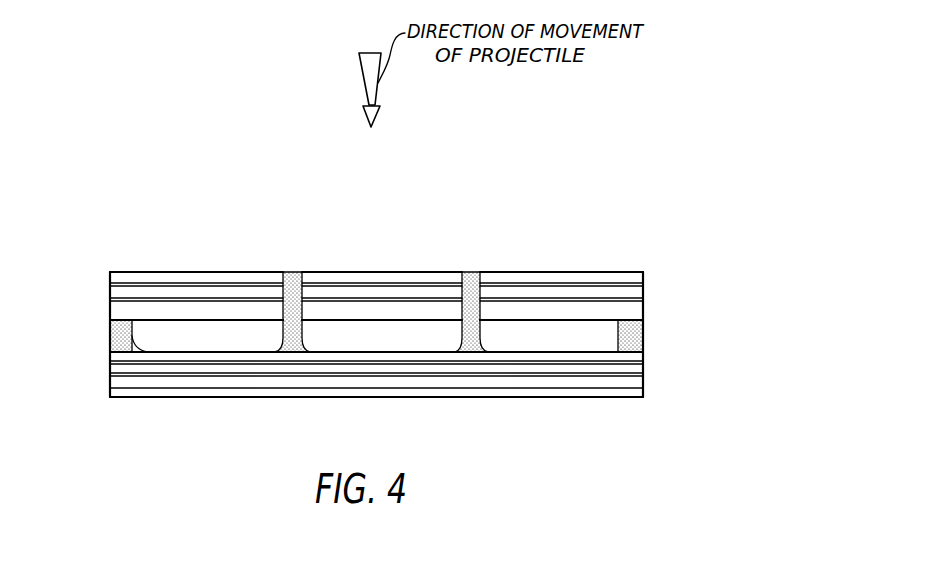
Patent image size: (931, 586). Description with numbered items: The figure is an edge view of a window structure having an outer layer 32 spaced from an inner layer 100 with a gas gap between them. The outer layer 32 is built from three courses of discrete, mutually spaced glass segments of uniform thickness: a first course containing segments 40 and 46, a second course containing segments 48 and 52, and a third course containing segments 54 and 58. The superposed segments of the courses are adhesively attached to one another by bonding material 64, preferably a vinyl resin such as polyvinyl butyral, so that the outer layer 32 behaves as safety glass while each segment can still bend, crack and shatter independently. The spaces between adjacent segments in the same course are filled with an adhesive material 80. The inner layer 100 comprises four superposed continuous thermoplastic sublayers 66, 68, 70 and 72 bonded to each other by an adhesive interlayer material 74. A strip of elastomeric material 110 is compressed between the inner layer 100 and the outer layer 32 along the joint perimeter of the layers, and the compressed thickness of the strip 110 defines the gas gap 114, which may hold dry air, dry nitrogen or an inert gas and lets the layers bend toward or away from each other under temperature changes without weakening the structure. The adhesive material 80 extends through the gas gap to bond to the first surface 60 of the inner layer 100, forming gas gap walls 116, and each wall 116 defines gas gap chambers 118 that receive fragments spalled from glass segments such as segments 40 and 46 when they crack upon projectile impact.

The outer layer 32 is at (95, 266).
The glass segment 54 is at (143, 278).
The glass segment 58 is at (627, 278).
The bonding material 64 is at (645, 287).
The glass segment 48 is at (112, 291).
The glass segment 52 is at (633, 294).
The glass segment 40 is at (112, 312).
The gas gap 114 is at (207, 327).
The gas gap chamber 118 is at (560, 327).
The gas gap wall 116 is at (462, 331).
The adhesive material 80 is at (294, 273).
The strip of elastomeric material 110 is at (112, 336).
The glass segment 46 is at (643, 318).
The first surface 60 is at (112, 350).
The thermoplastic sublayer 66 is at (535, 355).
The thermoplastic sublayer 68 is at (580, 368).
The thermoplastic sublayer 70 is at (620, 383).
The thermoplastic sublayer 72 is at (642, 393).
The adhesive interlayer material 74 is at (137, 358).
The inner layer 100 is at (103, 375).